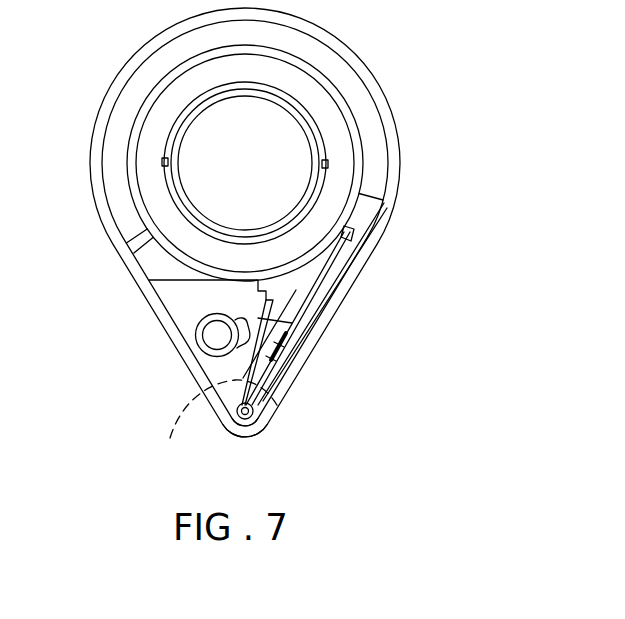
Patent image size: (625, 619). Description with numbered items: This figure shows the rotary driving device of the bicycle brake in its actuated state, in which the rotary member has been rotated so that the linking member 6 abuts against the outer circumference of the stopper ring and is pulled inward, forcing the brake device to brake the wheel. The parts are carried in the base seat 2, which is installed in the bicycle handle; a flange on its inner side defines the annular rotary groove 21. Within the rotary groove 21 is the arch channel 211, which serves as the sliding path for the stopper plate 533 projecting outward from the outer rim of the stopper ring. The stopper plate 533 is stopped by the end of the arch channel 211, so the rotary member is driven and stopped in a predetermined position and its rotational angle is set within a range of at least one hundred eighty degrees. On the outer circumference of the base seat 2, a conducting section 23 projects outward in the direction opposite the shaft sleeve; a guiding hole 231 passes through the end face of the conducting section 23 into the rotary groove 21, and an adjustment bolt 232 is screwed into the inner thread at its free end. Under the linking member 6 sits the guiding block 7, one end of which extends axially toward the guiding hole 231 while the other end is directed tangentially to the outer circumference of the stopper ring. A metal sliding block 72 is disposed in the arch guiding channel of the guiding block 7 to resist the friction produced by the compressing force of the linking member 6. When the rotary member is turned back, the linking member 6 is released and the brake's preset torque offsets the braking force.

The base seat 2 is at (387, 99).
The arch channel 211 is at (372, 138).
The rotary groove 21 is at (147, 253).
The stopper plate 533 is at (368, 215).
The linking member 6 is at (267, 350).
The guiding block 7 is at (293, 291).
The metal sliding block 72 is at (310, 340).
The guiding hole 231 is at (268, 411).
The adjustment bolt 232 is at (205, 429).
The conducting section 23 is at (262, 434).